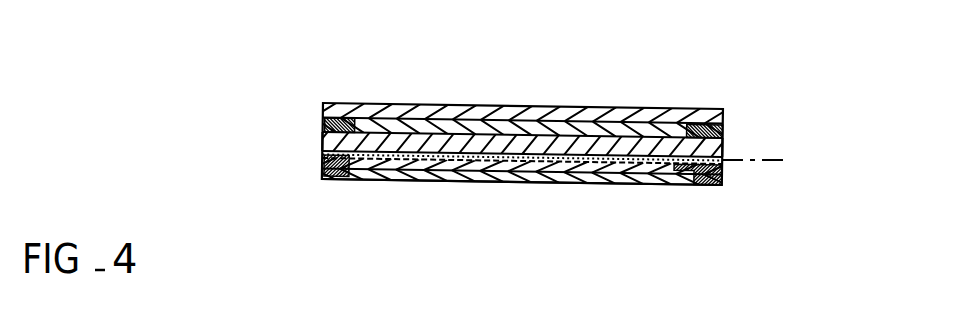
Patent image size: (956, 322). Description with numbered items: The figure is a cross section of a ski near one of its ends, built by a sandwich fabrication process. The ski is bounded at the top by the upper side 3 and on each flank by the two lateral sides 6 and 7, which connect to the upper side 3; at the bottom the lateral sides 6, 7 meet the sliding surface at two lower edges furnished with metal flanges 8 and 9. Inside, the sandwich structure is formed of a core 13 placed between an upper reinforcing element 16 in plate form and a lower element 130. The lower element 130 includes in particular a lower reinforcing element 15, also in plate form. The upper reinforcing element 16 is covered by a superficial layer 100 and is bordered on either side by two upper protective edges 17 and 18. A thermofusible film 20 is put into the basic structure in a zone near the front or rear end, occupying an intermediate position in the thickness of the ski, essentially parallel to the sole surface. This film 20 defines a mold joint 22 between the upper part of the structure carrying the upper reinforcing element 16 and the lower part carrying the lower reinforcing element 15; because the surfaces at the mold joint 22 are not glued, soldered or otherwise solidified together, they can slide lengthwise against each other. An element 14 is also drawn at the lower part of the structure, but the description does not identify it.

The upper side 3 is at (394, 97).
The lateral side 6 is at (312, 141).
The lateral side 7 is at (734, 145).
The metal flange 8 is at (322, 168).
The metal flange 9 is at (723, 175).
The core 13 is at (553, 146).
The adhesive layer 14 is at (387, 172).
The lower reinforcing element 15 is at (463, 163).
The upper reinforcing element 16 is at (467, 124).
The upper protective edge 17 is at (322, 123).
The upper protective edge 18 is at (723, 128).
The thermofusible film 20 is at (638, 167).
The mold joint 22 is at (777, 160).
The superficial layer 100 is at (640, 112).
The lower element 130 is at (559, 194).